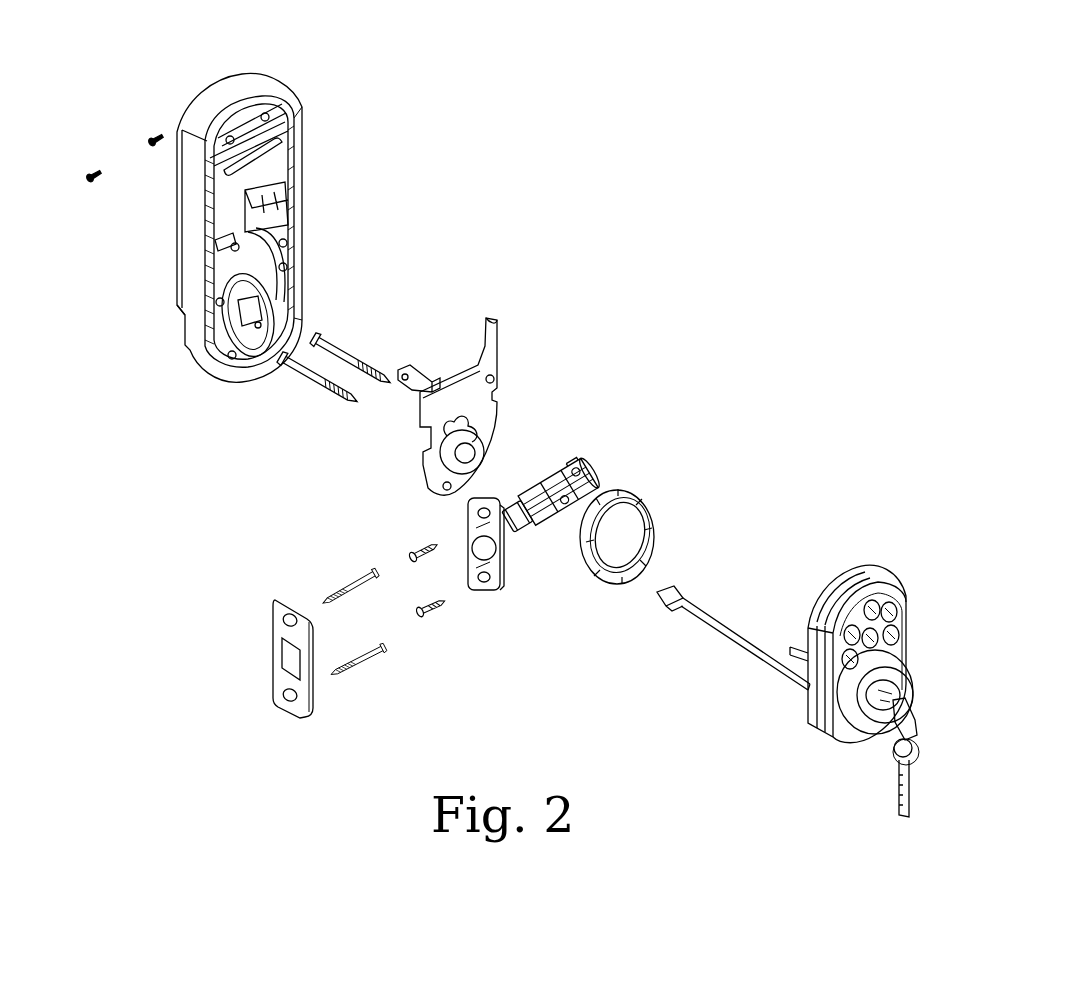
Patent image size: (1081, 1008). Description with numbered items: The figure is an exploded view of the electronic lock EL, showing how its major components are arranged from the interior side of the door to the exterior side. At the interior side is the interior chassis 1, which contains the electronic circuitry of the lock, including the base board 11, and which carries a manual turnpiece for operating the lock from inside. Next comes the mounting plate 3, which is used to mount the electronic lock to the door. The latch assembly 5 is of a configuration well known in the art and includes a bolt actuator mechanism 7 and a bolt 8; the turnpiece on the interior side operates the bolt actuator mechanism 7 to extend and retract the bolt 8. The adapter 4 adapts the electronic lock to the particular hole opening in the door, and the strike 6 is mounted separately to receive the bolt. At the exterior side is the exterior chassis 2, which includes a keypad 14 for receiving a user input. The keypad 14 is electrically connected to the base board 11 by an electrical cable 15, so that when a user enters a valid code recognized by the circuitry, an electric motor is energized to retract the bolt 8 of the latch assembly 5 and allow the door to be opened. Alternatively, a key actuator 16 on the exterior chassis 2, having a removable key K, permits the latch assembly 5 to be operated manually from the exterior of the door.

The electronic lock EL is at (803, 189).
The interior chassis 1 is at (290, 80).
The base board 11 is at (303, 153).
The mounting plate 3 is at (504, 361).
The latch assembly 5 is at (582, 461).
The bolt actuator mechanism 7 is at (570, 518).
The bolt 8 is at (477, 547).
The adapter 4 is at (655, 491).
The strike 6 is at (277, 702).
The electrical cable 15 is at (720, 620).
The exterior chassis 2 is at (882, 561).
The keypad 14 is at (907, 615).
The key actuator 16 is at (922, 676).
The key K is at (918, 713).